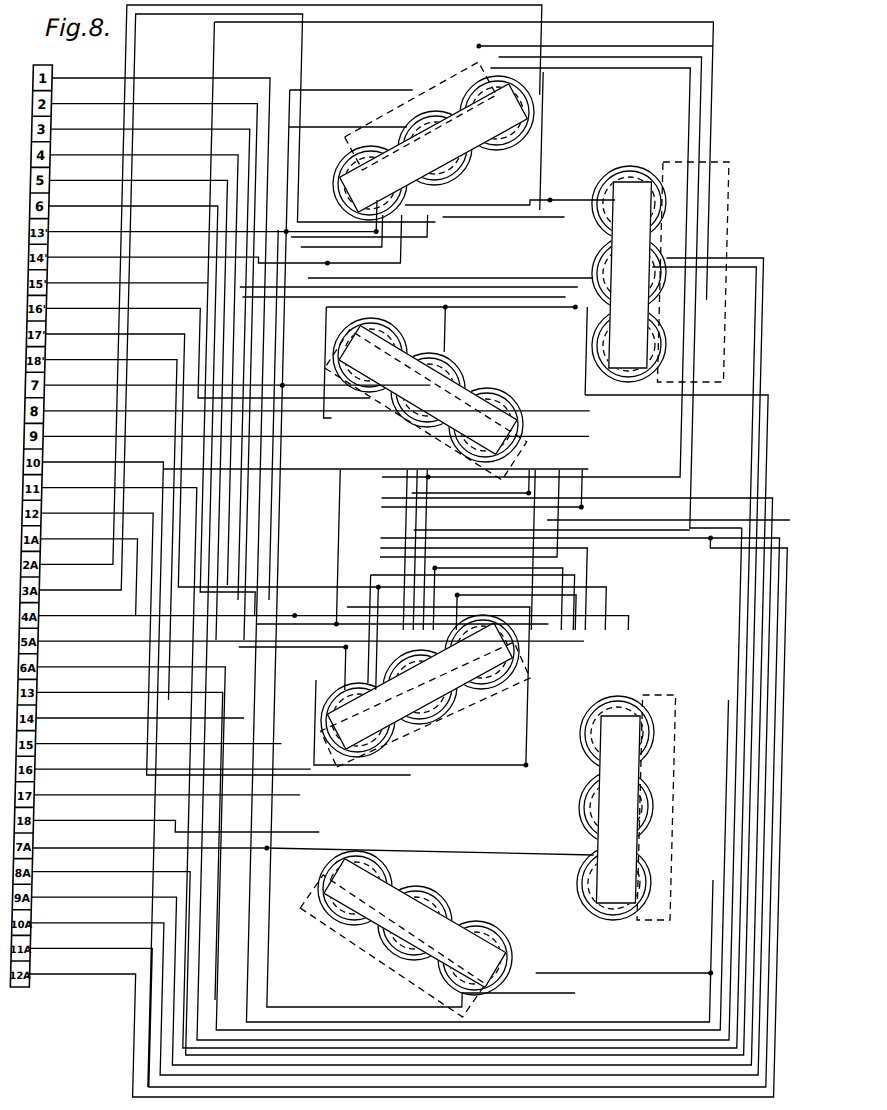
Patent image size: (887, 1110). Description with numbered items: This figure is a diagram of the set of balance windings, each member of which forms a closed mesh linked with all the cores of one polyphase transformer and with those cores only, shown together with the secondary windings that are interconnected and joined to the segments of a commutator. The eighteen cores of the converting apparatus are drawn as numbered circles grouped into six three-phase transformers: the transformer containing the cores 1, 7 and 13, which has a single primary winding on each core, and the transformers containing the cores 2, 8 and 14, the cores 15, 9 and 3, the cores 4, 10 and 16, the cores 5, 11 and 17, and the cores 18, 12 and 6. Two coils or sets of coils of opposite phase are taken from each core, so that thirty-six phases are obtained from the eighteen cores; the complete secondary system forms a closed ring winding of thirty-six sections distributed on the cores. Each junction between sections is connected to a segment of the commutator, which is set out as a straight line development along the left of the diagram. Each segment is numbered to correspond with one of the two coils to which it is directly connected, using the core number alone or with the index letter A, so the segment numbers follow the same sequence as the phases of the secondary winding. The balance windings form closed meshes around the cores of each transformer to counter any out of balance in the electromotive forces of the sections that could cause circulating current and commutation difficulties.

The core 1 is at (370, 183).
The core 2 is at (629, 203).
The core 3 is at (486, 425).
The core 4 is at (358, 720).
The core 5 is at (617, 733).
The core 6 is at (475, 958).
The core 7 is at (435, 148).
The core 8 is at (629, 273).
The core 9 is at (428, 390).
The core 10 is at (420, 687).
The core 11 is at (616, 807).
The core 12 is at (415, 923).
The core 13 is at (497, 113).
The core 14 is at (629, 345).
The core 15 is at (370, 355).
The core 16 is at (482, 652).
The core 17 is at (614, 883).
The core 18 is at (355, 888).